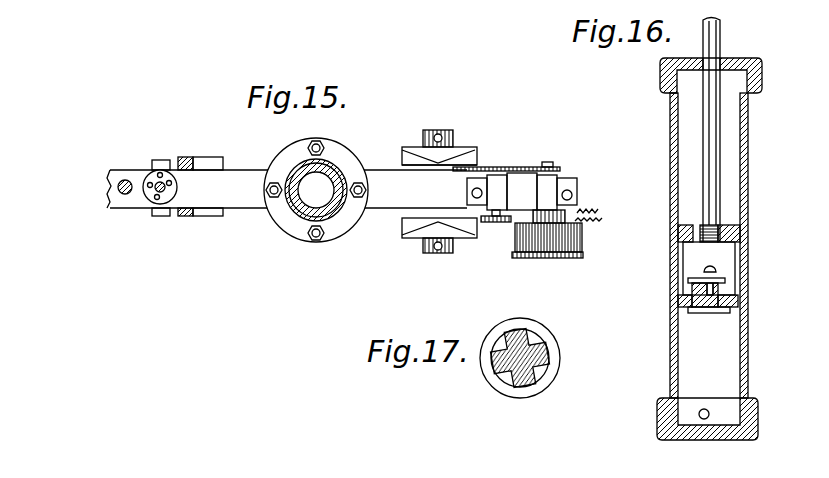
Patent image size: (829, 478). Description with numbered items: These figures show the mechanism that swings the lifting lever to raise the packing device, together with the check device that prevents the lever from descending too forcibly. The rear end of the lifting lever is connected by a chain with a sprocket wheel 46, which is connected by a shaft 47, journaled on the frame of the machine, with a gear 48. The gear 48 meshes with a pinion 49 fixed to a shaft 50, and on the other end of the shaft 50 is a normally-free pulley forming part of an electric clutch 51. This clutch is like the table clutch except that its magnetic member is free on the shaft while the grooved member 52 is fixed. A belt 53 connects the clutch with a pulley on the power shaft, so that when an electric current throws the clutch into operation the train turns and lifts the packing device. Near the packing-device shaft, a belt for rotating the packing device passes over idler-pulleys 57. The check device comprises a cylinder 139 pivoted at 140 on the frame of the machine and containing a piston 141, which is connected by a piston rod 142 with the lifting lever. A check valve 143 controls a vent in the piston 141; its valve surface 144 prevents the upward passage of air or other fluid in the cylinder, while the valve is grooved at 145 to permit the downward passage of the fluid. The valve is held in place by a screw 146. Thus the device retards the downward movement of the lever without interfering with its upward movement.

In FIG. 15, the cylinder 139 is at (157, 197).
In FIG. 16, the cylinder 139 is at (748, 200).
In FIG. 15, the idler-pulleys 57 is at (417, 227).
In FIG. 15, the gear 48 is at (507, 168).
In FIG. 15, the pinion 49 is at (558, 172).
In FIG. 15, the shaft 50 is at (547, 162).
In FIG. 15, the shaft 47 is at (499, 223).
In FIG. 15, the sprocket wheel 46 is at (487, 222).
In FIG. 15, the electric clutch 51 is at (548, 248).
In FIG. 15, the grooved member 52 is at (575, 258).
In FIG. 15, the belt 53 is at (582, 240).
In FIG. 16, the piston rod 142 is at (718, 135).
In FIG. 16, the piston 141 is at (748, 250).
In FIG. 16, the groove 145 is at (722, 288).
In FIG. 16, the screw 146 is at (700, 277).
In FIG. 16, the valve surface 144 is at (688, 308).
In FIG. 16, the check valve 143 is at (703, 310).
In FIG. 17, the check valve 143 is at (523, 375).
In FIG. 16, the pivot 140 is at (704, 420).